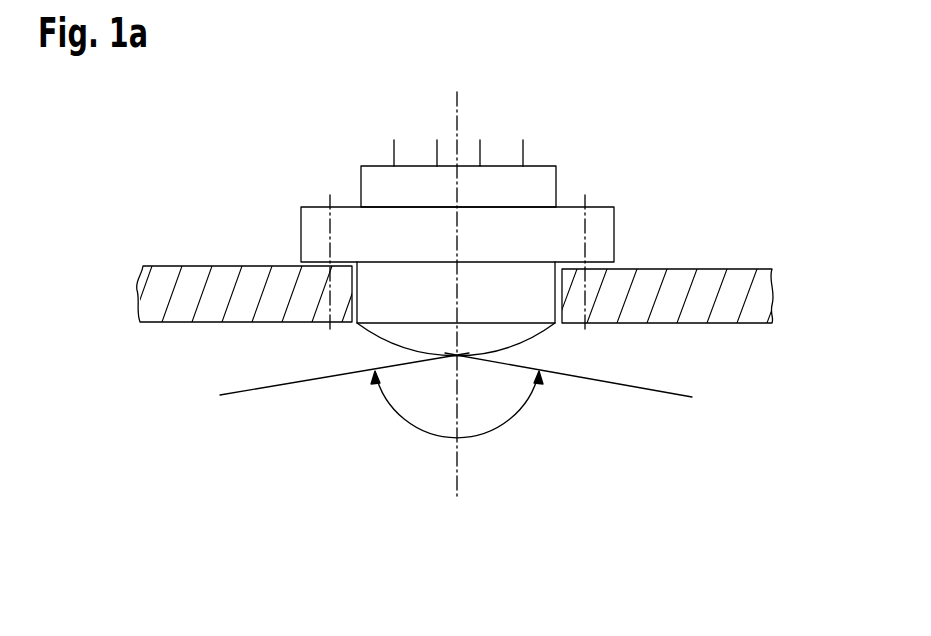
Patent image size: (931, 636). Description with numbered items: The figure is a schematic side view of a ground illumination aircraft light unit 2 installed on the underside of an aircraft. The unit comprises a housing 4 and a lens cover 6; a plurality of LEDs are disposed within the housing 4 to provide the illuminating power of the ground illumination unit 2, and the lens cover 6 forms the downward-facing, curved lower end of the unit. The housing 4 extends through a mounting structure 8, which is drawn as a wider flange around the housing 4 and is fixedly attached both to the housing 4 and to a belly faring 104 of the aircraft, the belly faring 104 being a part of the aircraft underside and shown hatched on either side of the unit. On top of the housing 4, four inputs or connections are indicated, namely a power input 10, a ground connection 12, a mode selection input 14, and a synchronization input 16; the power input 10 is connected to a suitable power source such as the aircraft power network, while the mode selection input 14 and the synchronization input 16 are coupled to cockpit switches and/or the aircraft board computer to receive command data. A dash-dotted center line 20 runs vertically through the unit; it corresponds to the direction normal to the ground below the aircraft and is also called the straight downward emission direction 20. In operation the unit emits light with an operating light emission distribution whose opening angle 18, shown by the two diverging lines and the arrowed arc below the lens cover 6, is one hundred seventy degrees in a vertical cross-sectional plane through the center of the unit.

The ground illumination aircraft light unit 2 is at (675, 115).
The housing 4 is at (543, 188).
The lens cover 6 is at (420, 337).
The mounting structure 8 is at (598, 238).
The power input 10 is at (392, 151).
The ground connection 12 is at (435, 151).
The mode selection input 14 is at (482, 151).
The synchronization input 16 is at (525, 151).
The opening angle 18 is at (403, 422).
The center line 20 is at (455, 480).
The belly faring 104 is at (752, 290).